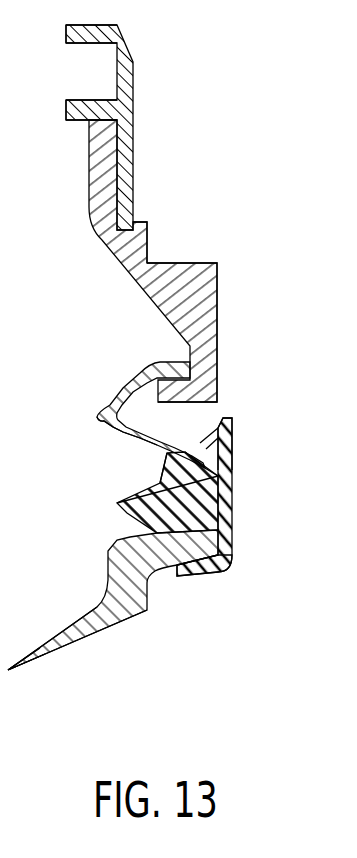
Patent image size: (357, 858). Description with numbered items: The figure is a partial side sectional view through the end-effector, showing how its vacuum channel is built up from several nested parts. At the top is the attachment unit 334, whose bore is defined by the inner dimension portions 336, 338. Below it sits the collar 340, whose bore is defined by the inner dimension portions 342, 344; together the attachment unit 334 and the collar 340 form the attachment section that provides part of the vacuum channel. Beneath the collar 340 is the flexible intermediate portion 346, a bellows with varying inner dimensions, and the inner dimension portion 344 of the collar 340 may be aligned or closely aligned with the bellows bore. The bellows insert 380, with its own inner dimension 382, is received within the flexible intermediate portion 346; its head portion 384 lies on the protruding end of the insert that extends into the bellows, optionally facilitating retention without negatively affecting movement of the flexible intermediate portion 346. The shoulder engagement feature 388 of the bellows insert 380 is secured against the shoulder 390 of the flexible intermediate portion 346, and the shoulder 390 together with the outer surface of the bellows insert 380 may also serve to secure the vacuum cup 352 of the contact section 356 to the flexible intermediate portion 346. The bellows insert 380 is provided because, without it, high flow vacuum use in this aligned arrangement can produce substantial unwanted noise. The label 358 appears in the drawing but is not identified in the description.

The attachment unit 334 is at (125, 84).
The inner dimension portion 336 is at (128, 52).
The inner dimension portion 338 is at (135, 113).
The collar 340 is at (108, 236).
The inner dimension portion 342 is at (147, 245).
The inner dimension portion 344 is at (217, 320).
The flexible intermediate portion 346 is at (123, 384).
The shoulder engagement feature 388 is at (127, 440).
The shoulder 390 is at (165, 480).
The inner dimension 382 is at (232, 502).
The head portion 384 is at (226, 412).
The bellows insert 380 is at (200, 568).
The vacuum cup 352 is at (128, 573).
The contact section 356 is at (57, 644).
The cannula tip 358 is at (40, 662).